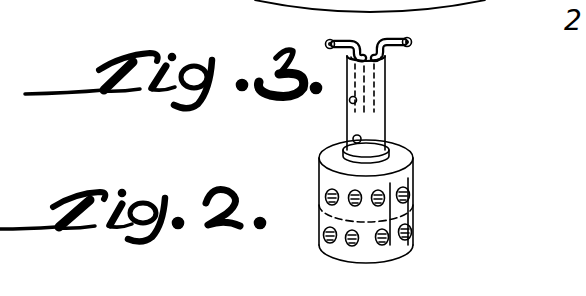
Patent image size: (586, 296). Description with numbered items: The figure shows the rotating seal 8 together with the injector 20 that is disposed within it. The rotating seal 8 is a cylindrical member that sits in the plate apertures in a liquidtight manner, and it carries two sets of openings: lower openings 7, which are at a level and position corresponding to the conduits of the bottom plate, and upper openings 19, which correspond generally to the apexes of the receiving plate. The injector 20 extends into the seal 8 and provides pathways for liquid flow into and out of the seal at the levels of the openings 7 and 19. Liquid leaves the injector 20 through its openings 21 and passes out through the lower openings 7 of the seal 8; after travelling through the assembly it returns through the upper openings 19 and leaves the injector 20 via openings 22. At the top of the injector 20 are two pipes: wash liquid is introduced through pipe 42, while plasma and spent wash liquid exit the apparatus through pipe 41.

In FIG. 2, the openings 7 is at (410, 229).
In FIG. 2, the rotating seal 8 is at (404, 154).
In FIG. 2, the openings 19 is at (327, 195).
In FIG. 3, the injector 20 is at (387, 95).
In FIG. 3, the openings 21 is at (352, 139).
In FIG. 3, the openings 22 is at (349, 103).
In FIG. 3, the pipe 41 is at (348, 37).
In FIG. 3, the pipe 42 is at (395, 38).